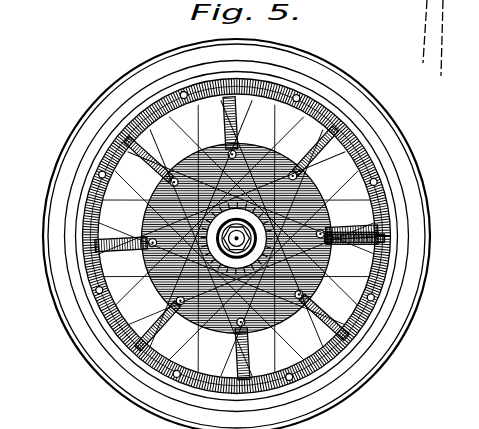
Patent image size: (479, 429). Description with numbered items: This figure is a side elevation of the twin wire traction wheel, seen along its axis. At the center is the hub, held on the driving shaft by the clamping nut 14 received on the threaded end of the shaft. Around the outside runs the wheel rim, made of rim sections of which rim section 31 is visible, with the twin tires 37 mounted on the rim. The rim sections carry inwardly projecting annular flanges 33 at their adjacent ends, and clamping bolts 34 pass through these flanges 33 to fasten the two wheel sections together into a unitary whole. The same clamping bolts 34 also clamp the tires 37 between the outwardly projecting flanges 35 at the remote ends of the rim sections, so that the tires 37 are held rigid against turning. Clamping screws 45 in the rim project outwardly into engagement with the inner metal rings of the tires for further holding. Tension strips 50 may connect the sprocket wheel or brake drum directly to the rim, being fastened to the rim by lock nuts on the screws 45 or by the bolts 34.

The clamping nut 14 is at (190, 348).
The rim section 31 is at (316, 100).
The inwardly projecting annular flanges 33 is at (353, 137).
The clamping bolts 34 is at (99, 291).
The outwardly projecting flanges 35 is at (127, 102).
The twin tires 37 is at (72, 152).
The clamping screws 45 is at (350, 300).
The tension strips 50 is at (118, 234).